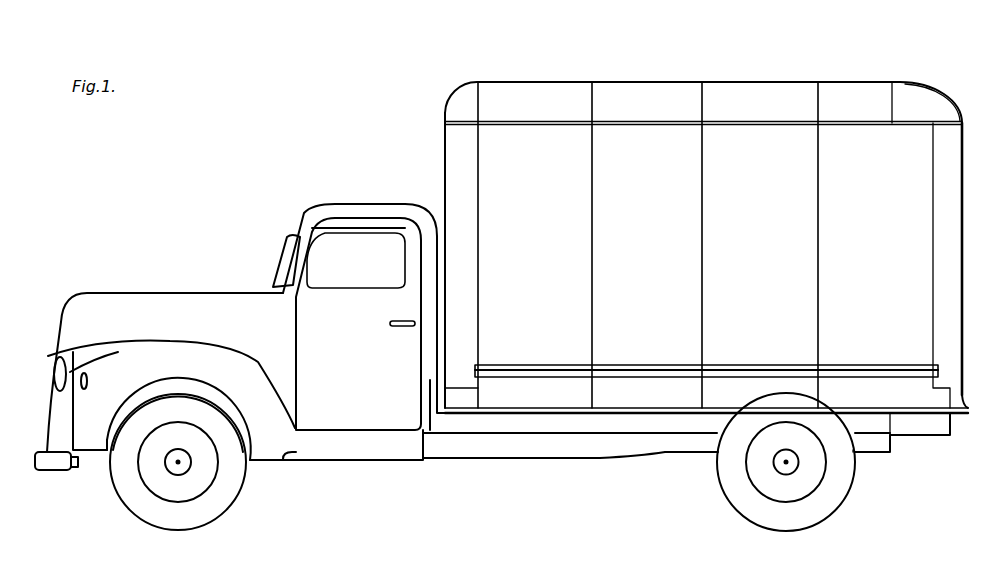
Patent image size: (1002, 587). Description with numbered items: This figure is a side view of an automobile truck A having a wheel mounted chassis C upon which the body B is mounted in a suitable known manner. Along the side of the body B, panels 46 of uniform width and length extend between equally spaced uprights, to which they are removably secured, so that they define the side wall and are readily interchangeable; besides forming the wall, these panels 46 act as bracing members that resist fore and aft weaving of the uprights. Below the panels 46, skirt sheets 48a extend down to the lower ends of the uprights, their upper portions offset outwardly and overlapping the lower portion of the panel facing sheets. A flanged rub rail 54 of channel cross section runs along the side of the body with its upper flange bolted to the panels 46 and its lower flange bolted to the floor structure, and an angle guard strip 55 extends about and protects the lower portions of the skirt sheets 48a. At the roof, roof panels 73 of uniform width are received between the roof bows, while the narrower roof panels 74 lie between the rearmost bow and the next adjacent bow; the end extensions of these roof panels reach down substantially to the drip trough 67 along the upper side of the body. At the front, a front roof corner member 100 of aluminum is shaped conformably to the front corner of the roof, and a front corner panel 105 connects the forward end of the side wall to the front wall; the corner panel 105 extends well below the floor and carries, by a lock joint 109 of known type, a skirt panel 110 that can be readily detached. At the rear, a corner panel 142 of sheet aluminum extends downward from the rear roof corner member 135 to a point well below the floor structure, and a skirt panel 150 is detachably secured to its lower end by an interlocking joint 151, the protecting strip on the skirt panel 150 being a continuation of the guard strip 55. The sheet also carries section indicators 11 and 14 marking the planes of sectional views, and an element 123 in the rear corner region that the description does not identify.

The front roof corner member 100 is at (457, 103).
The front corner panel 105 is at (448, 160).
The drip trough 67 is at (640, 124).
The roof panels 73 is at (566, 85).
The roof panels 74 is at (858, 72).
The rear roof corner members 135 is at (933, 95).
The rear corner post 123 is at (963, 125).
The corner panel 142 is at (949, 182).
The section line 11 is at (430, 118).
The section line 14 is at (908, 130).
The panels 46 is at (531, 232).
The flanged rub rail 54 is at (649, 366).
The lock joints 109 is at (458, 385).
The skirt panels 110 is at (466, 403).
The angle guard strip 55 is at (540, 411).
The interlocking joint 151 is at (950, 386).
The skirt panel 150 is at (955, 402).
The skirt sheets 48a is at (575, 400).
The automobile truck A is at (298, 188).
The body B is at (679, 46).
The wheel mounted chassis C is at (487, 473).